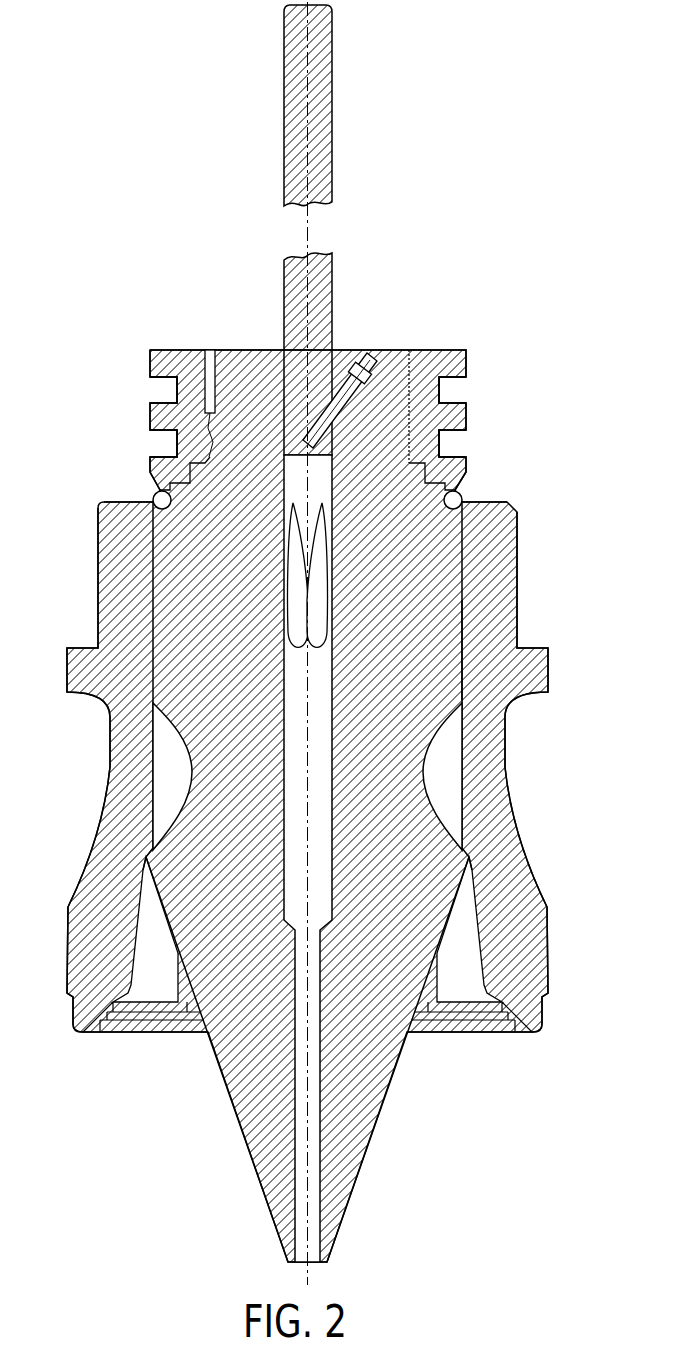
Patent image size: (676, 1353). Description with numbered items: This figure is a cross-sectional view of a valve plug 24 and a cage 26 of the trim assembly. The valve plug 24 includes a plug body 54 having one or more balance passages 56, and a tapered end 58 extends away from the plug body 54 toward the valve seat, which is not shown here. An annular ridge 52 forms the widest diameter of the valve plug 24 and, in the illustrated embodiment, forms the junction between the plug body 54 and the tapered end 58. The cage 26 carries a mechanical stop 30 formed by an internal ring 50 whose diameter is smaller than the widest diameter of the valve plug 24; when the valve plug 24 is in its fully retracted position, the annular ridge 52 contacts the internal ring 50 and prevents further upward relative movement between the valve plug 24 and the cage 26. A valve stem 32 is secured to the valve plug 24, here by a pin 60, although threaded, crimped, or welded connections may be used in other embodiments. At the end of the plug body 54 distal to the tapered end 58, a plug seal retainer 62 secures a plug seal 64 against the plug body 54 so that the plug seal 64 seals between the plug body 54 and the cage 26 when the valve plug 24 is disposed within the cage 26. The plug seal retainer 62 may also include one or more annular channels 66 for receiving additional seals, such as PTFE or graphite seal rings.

The valve plug 24 is at (447, 607).
The cage 26 is at (507, 512).
The mechanical stop 30 is at (128, 856).
The valve stem 32 is at (292, 287).
The internal ring 50 is at (463, 845).
The annular ridge 52 is at (462, 872).
The plug body 54 is at (447, 657).
The balance passages 56 is at (297, 863).
The tapered end 58 is at (362, 1130).
The pin 60 is at (362, 357).
The plug seal retainer 62 is at (163, 366).
The plug seal 64 is at (156, 497).
The annular channels 66 is at (163, 398).